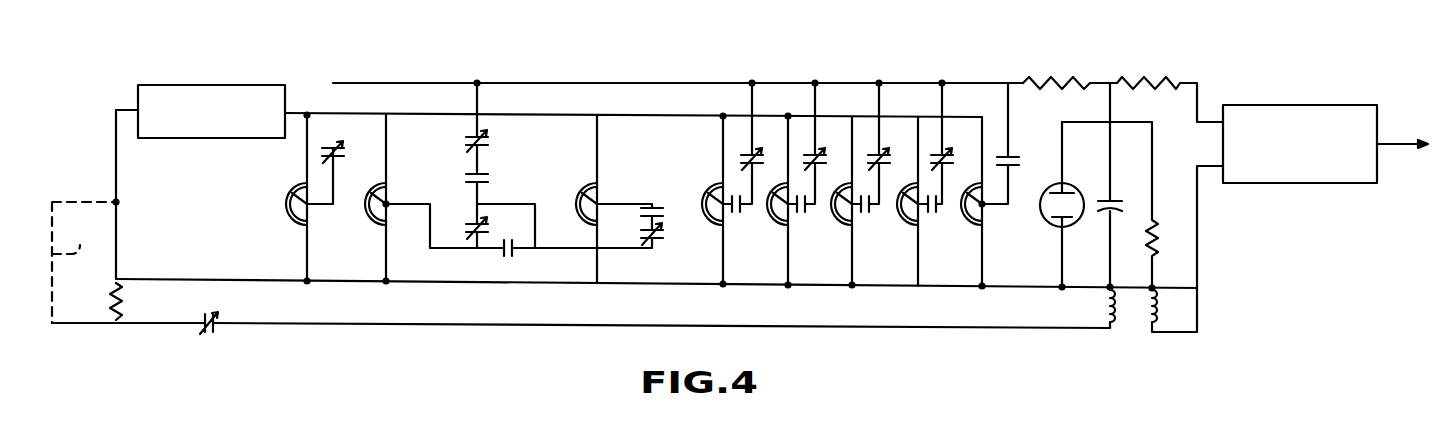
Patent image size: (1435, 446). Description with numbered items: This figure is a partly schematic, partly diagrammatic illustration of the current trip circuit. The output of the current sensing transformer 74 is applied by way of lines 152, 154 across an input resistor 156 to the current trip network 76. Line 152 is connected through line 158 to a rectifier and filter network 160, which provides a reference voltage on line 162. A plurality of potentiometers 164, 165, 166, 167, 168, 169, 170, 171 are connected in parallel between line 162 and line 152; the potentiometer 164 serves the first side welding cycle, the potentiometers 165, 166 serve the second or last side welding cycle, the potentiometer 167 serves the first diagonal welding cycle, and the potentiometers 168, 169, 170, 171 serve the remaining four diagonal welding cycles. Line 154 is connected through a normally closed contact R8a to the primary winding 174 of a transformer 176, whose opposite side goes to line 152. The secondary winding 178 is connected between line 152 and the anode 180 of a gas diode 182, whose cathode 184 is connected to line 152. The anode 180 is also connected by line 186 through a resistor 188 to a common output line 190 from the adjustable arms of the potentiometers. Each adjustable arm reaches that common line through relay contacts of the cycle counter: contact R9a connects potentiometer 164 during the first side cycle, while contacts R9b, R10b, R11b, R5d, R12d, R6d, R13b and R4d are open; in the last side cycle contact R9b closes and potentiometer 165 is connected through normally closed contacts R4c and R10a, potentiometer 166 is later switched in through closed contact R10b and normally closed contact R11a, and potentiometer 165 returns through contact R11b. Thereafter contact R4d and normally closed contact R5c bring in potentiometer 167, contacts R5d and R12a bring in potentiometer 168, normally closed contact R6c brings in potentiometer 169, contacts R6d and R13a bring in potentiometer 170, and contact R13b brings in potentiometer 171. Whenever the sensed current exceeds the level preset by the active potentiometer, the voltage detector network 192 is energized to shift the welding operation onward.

The current sensing transformer 74 is at (84, 262).
The current trip network 76 is at (960, 82).
The line 152 is at (95, 200).
The line 154 is at (92, 322).
The input resistor 156 is at (122, 292).
The line 158 is at (124, 108).
The rectifier and filter network 160 is at (215, 85).
The line 162 is at (299, 112).
The potentiometer 164 is at (298, 222).
The potentiometer 165 is at (377, 222).
The potentiometer 166 is at (596, 184).
The potentiometer 167 is at (716, 226).
The potentiometer 168 is at (780, 226).
The potentiometer 169 is at (843, 226).
The potentiometer 170 is at (908, 226).
The potentiometer 171 is at (975, 226).
The primary winding 174 is at (1106, 306).
The transformer 176 is at (1132, 325).
The secondary winding 178 is at (1160, 318).
The anode 180 is at (1054, 192).
The gas diode 182 is at (1076, 190).
The cathode 184 is at (1053, 222).
The line 186 is at (1113, 108).
The resistor 188 is at (1067, 82).
The common output line 190 is at (991, 82).
The voltage detector network 192 is at (1305, 105).
The normally closed contact R8a is at (217, 317).
The relay contact R9a is at (344, 157).
The relay contact R9b is at (489, 178).
The normally closed relay contact R4c is at (489, 140).
The normally open relay contact R4d is at (738, 214).
The normally closed relay contact R10a is at (470, 228).
The normally open relay contact R10b is at (688, 190).
The normally closed contact R11a is at (662, 238).
The normally open contact R11b is at (512, 258).
The normally closed relay contact R5c is at (761, 160).
The normally open relay contact R5d is at (804, 214).
The normally closed contact R12a is at (825, 160).
The relay contact R12d is at (870, 214).
The normally closed relay contact R6c is at (888, 160).
The normally open relay contact R6d is at (936, 214).
The normally closed relay contact R13a is at (952, 160).
The normally open relay contact R13b is at (1018, 164).